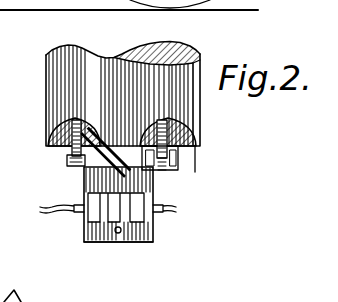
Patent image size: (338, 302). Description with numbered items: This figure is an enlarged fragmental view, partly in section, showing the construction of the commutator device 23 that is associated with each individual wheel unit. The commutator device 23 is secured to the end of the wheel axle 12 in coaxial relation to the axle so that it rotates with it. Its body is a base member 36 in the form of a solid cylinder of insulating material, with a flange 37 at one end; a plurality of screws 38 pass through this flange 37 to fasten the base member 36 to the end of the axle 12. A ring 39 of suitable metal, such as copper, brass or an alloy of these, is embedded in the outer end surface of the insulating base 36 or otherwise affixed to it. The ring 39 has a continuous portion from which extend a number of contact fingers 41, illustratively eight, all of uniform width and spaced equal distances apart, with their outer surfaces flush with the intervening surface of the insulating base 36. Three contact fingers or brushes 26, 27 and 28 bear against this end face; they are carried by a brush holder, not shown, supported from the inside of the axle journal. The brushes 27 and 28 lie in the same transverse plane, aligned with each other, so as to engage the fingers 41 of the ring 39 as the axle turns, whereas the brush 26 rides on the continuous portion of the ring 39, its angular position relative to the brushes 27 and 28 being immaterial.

The wheel axle 12 is at (173, 100).
The commutator device 23 is at (135, 251).
The brush 26 is at (117, 234).
The brush 27 is at (166, 209).
The brush 28 is at (76, 214).
The base member 36 is at (93, 184).
The flange 37 is at (163, 169).
The screws 38 is at (66, 158).
The ring 39 is at (135, 233).
The contact fingers 41 is at (88, 194).